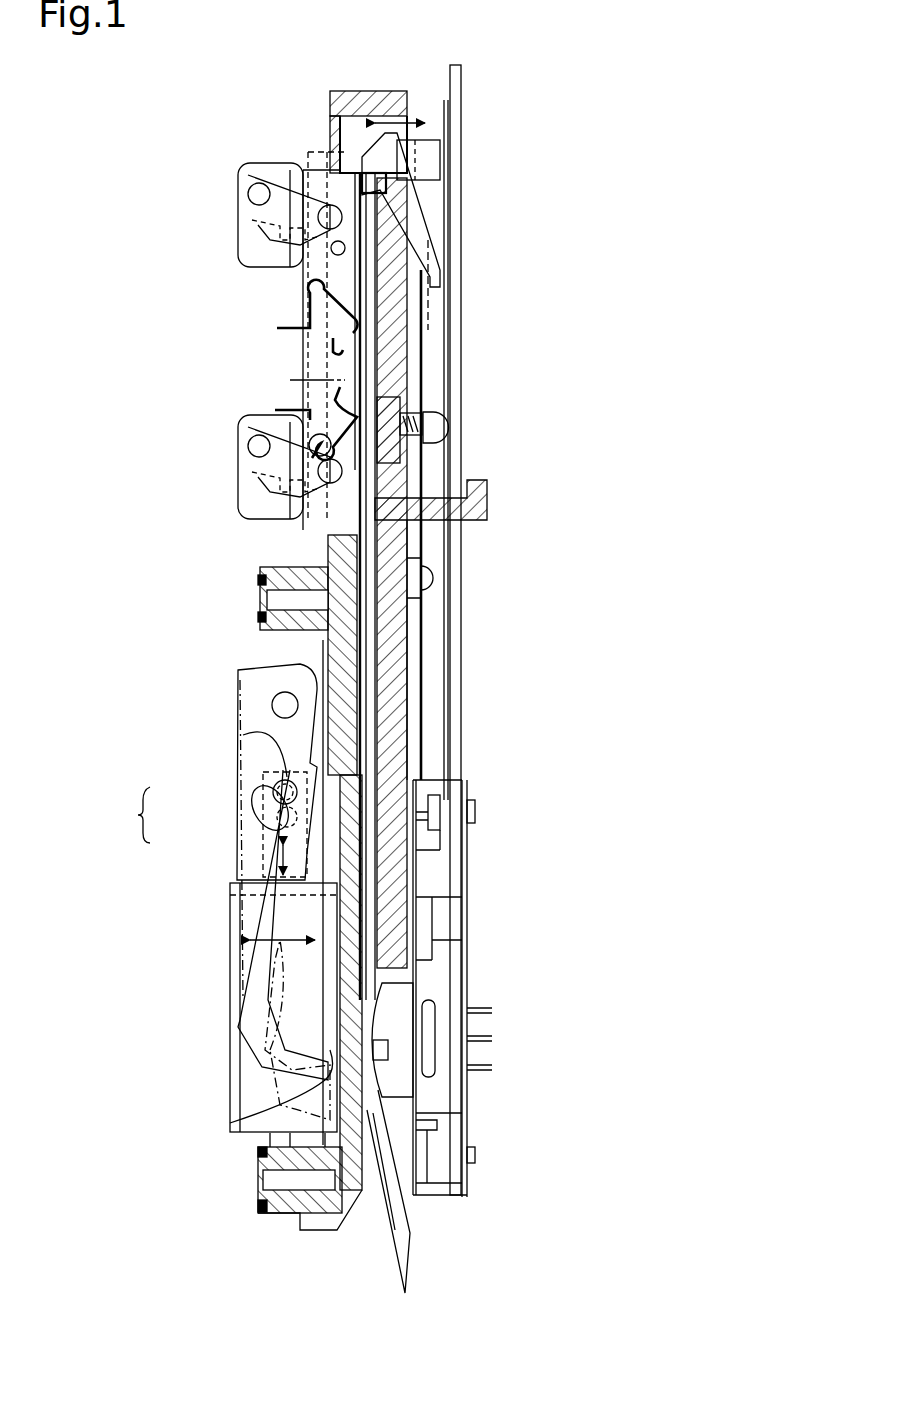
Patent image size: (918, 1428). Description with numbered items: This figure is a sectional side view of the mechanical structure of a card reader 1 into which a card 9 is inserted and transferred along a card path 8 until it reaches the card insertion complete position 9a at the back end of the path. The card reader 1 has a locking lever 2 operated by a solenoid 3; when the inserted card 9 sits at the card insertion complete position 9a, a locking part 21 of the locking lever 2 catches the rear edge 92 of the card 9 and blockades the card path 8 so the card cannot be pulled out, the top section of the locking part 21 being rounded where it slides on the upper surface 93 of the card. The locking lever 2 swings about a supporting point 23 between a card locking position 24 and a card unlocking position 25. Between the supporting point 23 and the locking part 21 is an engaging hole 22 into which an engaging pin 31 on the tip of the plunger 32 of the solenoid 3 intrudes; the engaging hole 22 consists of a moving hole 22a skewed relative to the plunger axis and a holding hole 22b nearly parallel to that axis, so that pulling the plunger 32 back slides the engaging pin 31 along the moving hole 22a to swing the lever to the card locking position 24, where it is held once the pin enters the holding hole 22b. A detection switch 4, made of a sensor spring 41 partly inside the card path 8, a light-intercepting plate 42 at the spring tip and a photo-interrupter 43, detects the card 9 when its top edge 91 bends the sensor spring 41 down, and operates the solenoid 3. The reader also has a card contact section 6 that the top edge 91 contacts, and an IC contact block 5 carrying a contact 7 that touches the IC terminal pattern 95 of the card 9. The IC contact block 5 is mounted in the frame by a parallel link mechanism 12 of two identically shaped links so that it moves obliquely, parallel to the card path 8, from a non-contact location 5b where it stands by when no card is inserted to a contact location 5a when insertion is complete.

The card reader 1 is at (145, 385).
The locking lever 2 is at (245, 760).
The solenoid 3 is at (240, 1090).
The detection switch 4 is at (533, 106).
The IC contact block 5 is at (315, 336).
The contact location 5a is at (318, 150).
The non-contact location 5b is at (325, 382).
The card contact section 6 is at (400, 222).
The contact 7 is at (378, 378).
The card path 8 is at (363, 1203).
The card 9 is at (372, 652).
The card insertion complete position 9a is at (370, 626).
The parallel link mechanism 12 is at (222, 195).
The locking part 21 is at (305, 1085).
The engaging hole 22 is at (127, 815).
The moving hole 22a is at (270, 800).
The holding hole 22b is at (257, 826).
The supporting point 23 is at (282, 690).
The card locking position 24 is at (255, 1022).
The card unlocking position 25 is at (254, 985).
The engaging pin 31 is at (262, 740).
The plunger 32 is at (270, 868).
The sensor spring 41 is at (420, 252).
The light-intercepting plate 42 is at (397, 183).
The photo-interrupter 43 is at (432, 166).
The top edge 91 is at (355, 173).
The rear edge 92 is at (410, 1165).
The upper surface 93 is at (366, 704).
The IC terminal pattern 95 is at (445, 445).